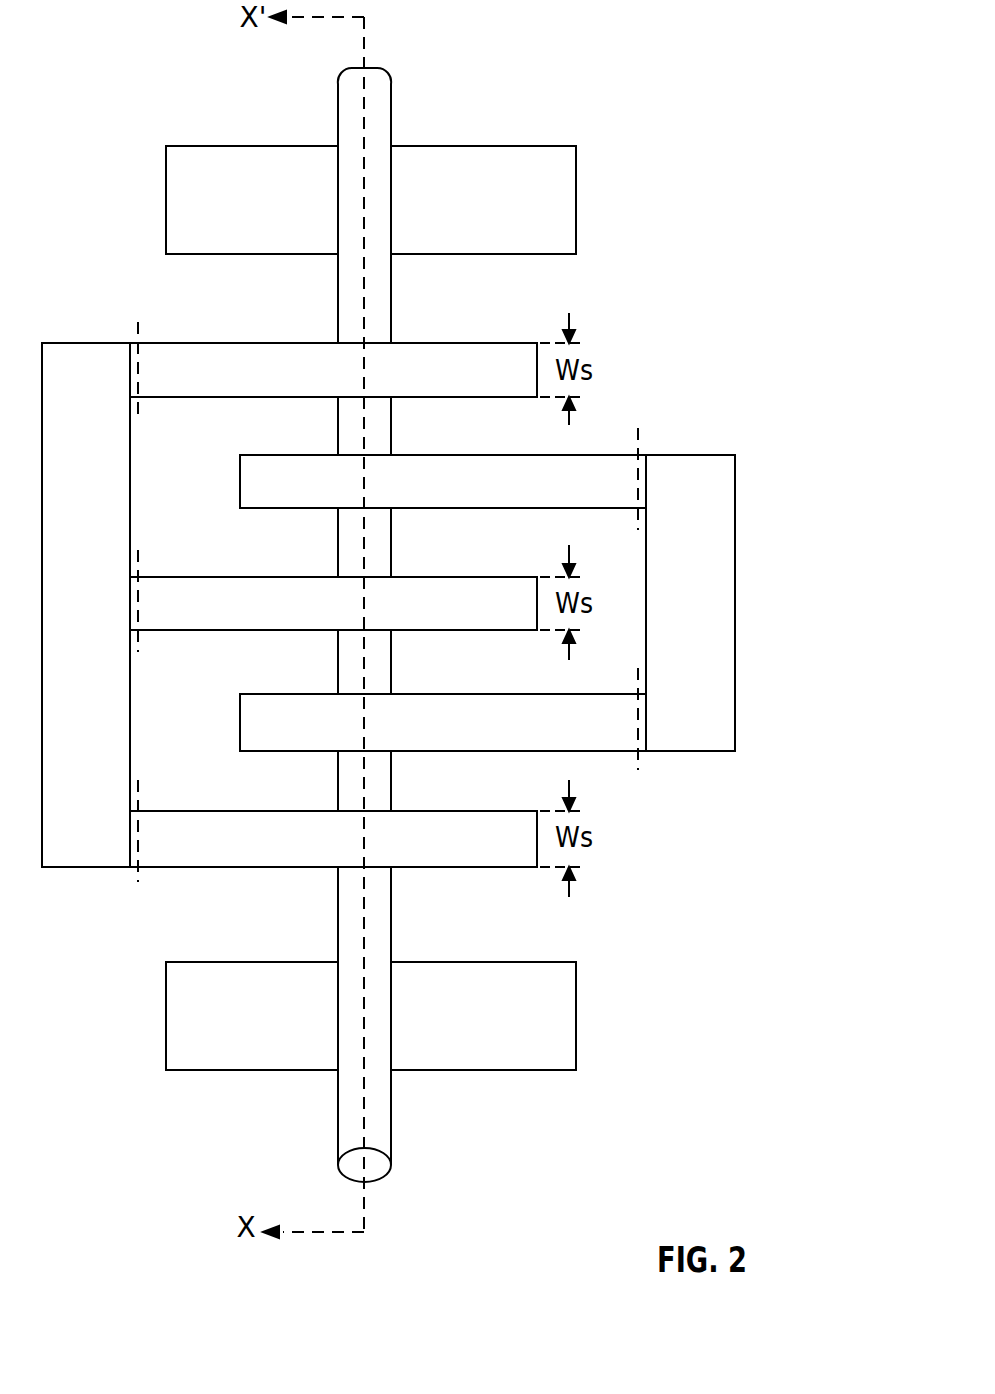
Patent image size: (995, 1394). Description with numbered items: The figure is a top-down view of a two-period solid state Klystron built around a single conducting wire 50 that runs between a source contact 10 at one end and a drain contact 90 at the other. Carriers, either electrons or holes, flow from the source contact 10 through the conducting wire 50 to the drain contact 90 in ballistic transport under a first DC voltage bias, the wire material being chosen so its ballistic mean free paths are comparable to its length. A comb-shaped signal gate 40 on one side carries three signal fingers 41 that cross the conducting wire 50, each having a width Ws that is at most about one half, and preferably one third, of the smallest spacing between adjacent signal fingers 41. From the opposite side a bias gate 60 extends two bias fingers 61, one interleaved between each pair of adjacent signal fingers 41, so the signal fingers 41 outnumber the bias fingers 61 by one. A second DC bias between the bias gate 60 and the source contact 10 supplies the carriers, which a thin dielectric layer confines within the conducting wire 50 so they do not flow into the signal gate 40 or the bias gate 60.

The source contact 10 is at (237, 1029).
The signal gate 40 is at (72, 607).
The signal fingers 41 is at (248, 343).
The conducting wire 50 is at (391, 282).
The bias gate 60 is at (672, 607).
The bias fingers 61 is at (502, 463).
The drain contact 90 is at (253, 209).